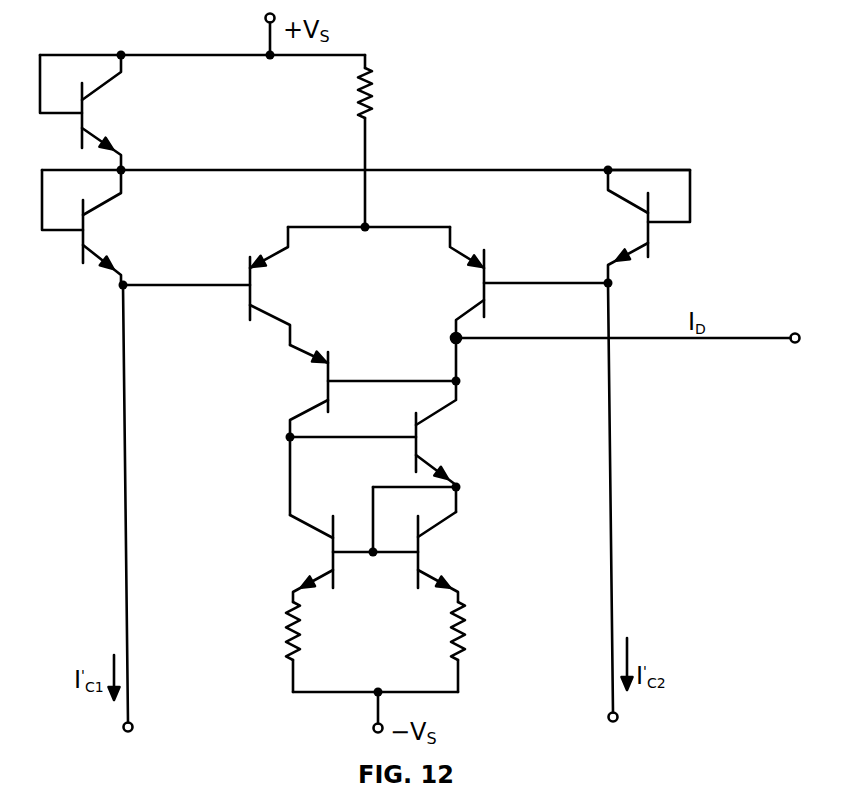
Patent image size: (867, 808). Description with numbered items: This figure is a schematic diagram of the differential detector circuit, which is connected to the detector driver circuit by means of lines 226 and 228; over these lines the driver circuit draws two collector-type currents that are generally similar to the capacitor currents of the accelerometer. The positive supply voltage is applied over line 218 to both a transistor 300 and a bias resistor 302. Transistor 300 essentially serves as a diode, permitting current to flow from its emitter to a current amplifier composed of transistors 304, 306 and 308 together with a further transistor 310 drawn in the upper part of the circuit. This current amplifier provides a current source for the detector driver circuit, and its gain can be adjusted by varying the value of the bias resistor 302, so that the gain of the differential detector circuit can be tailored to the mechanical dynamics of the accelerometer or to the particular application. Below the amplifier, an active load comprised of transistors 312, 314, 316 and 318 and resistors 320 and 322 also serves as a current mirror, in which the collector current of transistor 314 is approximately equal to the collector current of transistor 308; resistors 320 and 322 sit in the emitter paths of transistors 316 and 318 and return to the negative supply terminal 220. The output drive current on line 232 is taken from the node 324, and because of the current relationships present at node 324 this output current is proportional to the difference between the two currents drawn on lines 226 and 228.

The line 218 is at (266, 22).
The negative supply terminal 220 is at (375, 710).
The line 226 is at (126, 540).
The line 228 is at (615, 548).
The line 232 is at (663, 340).
The transistor 300 is at (85, 108).
The bias resistor 302 is at (374, 92).
The transistor 304 is at (86, 230).
The transistor 306 is at (646, 218).
The transistor 308 is at (256, 289).
The transistor 310 is at (486, 263).
The transistor 312 is at (325, 372).
The transistor 314 is at (420, 431).
The transistor 316 is at (330, 547).
The transistor 318 is at (422, 543).
The resistor 320 is at (289, 641).
The resistor 322 is at (468, 615).
The node 324 is at (462, 341).